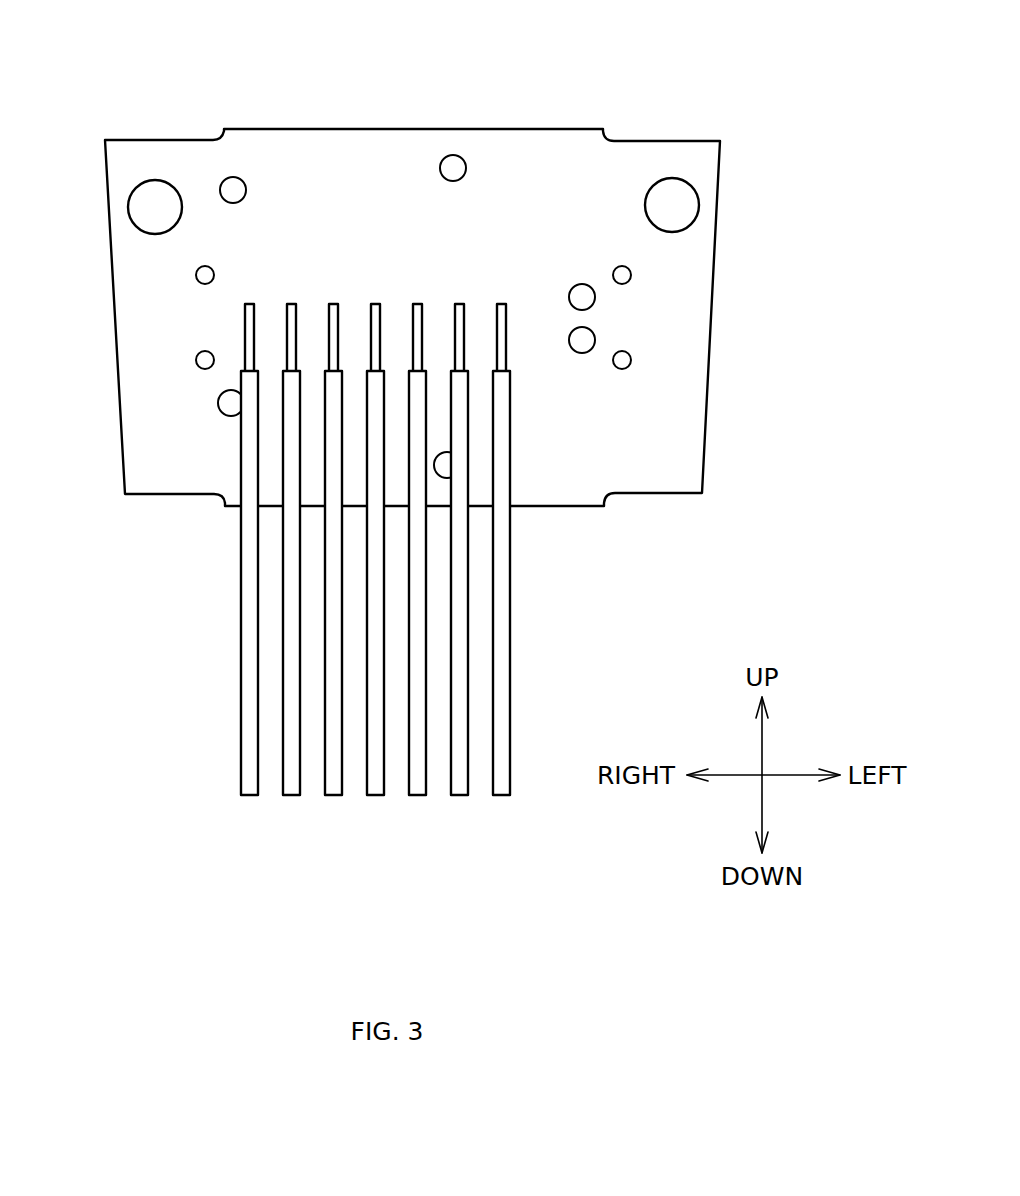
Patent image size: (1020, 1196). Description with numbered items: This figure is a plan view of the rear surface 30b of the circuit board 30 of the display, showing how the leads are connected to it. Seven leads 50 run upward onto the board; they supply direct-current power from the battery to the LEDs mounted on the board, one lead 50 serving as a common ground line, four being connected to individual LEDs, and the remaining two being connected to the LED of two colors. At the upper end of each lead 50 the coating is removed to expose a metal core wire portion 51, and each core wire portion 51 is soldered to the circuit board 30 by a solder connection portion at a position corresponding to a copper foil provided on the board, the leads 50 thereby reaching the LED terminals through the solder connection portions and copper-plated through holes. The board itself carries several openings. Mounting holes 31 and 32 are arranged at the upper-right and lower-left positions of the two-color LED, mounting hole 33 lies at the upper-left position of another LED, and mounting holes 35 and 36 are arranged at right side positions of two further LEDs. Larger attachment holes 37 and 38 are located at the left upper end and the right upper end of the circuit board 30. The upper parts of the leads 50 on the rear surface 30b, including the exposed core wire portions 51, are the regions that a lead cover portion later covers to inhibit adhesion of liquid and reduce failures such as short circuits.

The circuit board 30 is at (573, 168).
The rear surface 30b is at (672, 388).
The mounting hole 31 is at (453, 170).
The mounting hole 32 is at (582, 297).
The mounting hole 33 is at (579, 340).
The mounting hole 35 is at (233, 188).
The mounting hole 36 is at (230, 404).
The attachment hole 37 is at (153, 198).
The attachment hole 38 is at (672, 202).
The lead 50 is at (510, 772).
The core wire portion 51 is at (506, 313).